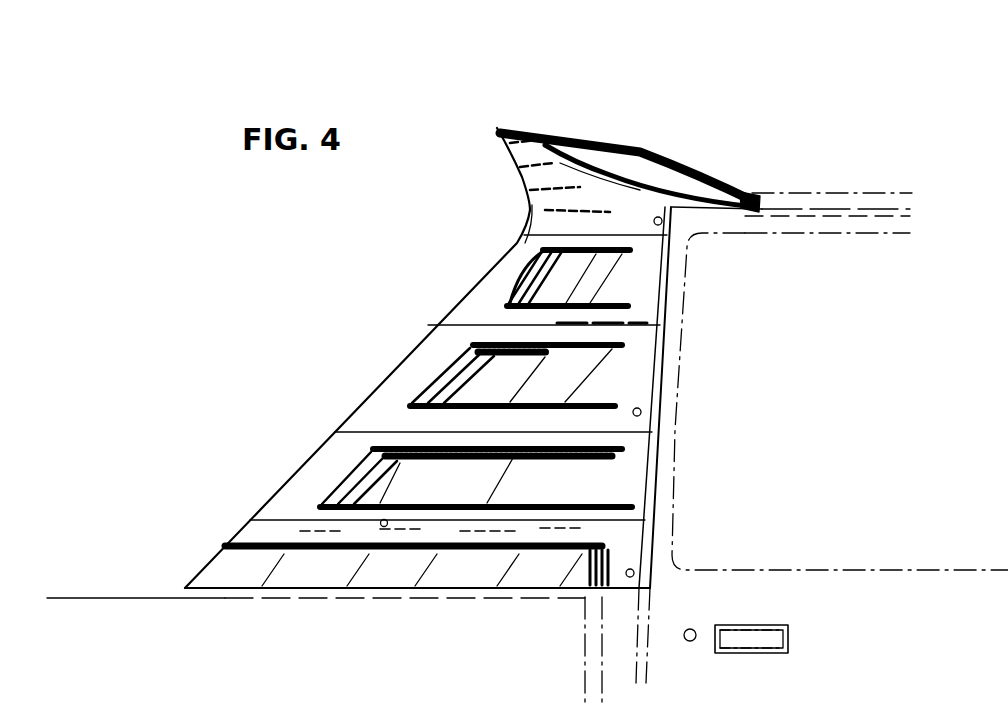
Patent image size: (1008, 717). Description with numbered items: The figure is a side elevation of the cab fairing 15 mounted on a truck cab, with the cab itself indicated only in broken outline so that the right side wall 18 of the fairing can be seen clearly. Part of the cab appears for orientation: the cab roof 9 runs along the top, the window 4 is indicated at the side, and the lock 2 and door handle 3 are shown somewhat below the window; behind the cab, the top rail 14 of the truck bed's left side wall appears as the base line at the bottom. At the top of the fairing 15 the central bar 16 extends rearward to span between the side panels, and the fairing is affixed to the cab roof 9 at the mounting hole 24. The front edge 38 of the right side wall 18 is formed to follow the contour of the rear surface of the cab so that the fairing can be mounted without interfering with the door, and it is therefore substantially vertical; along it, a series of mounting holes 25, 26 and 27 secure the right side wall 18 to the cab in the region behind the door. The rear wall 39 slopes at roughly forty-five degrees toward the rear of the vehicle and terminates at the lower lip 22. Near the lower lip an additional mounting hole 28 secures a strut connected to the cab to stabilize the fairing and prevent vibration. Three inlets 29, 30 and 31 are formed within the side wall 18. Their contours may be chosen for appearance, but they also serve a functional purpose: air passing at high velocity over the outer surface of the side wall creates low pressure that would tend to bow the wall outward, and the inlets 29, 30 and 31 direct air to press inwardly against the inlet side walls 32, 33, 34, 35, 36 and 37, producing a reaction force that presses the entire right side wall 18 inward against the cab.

The lock 2 is at (690, 628).
The door handle 3 is at (730, 623).
The window 4 is at (896, 570).
The cab roof 9 is at (860, 190).
The top rail 14 is at (112, 598).
The cab fairing 15 is at (697, 177).
The central bar 16 is at (603, 145).
The right side wall 18 is at (647, 365).
The lower lip 22 is at (216, 560).
The mounting hole 24 is at (750, 188).
The mounting hole 25 is at (672, 226).
The mounting hole 26 is at (641, 412).
The mounting hole 27 is at (634, 571).
The additional mounting hole 28 is at (358, 553).
The inlet 29 is at (547, 263).
The inlet 30 is at (457, 363).
The inlet 31 is at (350, 486).
The inlet side wall 32 is at (527, 283).
The inlet side wall 33 is at (520, 303).
The inlet side wall 34 is at (512, 338).
The inlet side wall 35 is at (470, 402).
The inlet side wall 36 is at (452, 456).
The inlet side wall 37 is at (438, 496).
The front edge 38 is at (655, 487).
The rear wall 39 is at (383, 387).